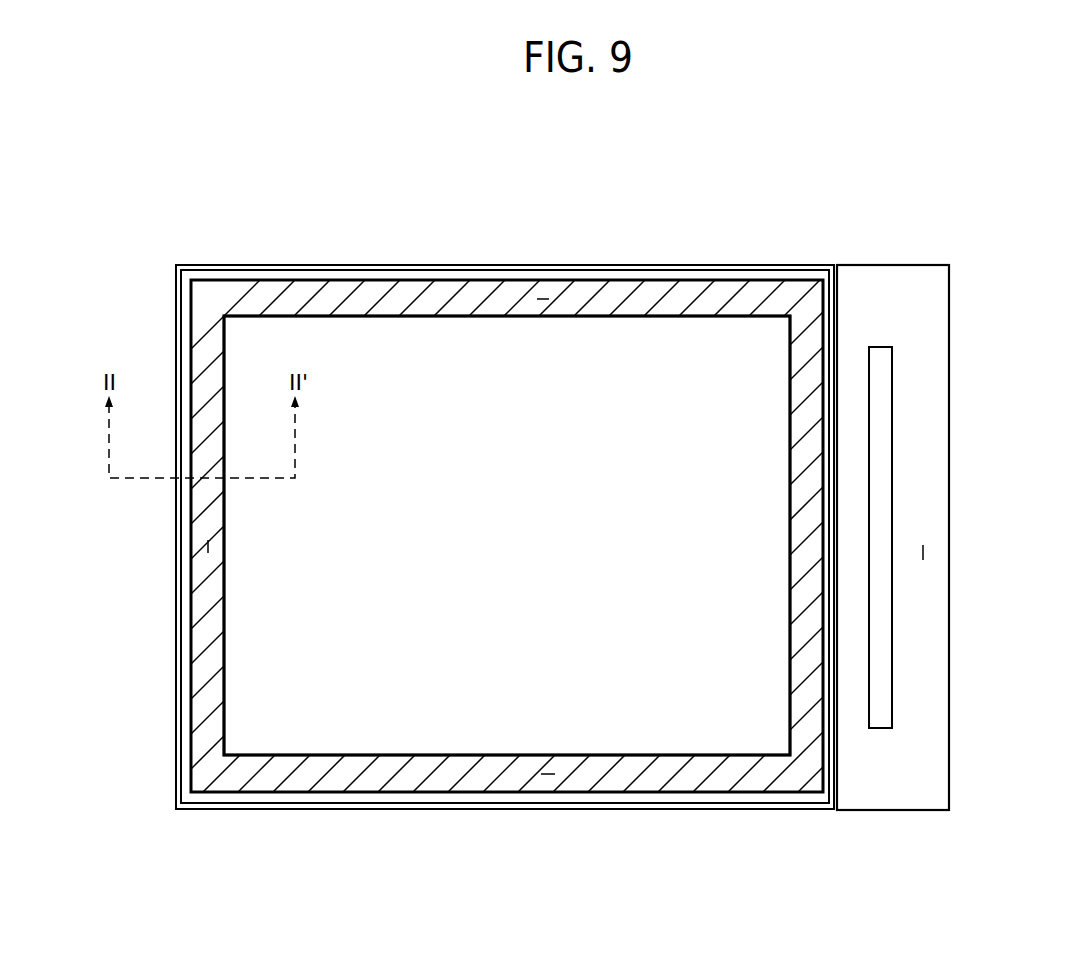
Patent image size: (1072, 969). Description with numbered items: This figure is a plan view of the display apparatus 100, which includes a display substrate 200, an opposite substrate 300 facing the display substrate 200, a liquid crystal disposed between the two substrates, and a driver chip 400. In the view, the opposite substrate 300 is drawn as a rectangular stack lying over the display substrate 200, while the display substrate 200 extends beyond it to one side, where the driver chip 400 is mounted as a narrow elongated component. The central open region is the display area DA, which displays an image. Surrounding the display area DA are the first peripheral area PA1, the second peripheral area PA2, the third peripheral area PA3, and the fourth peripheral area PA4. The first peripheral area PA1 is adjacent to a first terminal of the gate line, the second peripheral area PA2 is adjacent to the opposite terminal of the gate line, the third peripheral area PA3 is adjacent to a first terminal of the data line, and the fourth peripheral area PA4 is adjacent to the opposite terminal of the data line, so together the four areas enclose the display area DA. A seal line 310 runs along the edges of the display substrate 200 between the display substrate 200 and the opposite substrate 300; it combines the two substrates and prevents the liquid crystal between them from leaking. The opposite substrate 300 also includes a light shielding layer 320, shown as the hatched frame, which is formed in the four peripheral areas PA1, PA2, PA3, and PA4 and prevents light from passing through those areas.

The display apparatus 100 is at (890, 238).
The display substrate 200 is at (950, 702).
The opposite substrate 300 is at (840, 773).
The seal line 310 is at (183, 686).
The light shielding layer 320 is at (210, 620).
The driver chip 400 is at (892, 630).
The display area DA is at (668, 372).
The first peripheral area PA1 is at (208, 545).
The second peripheral area PA2 is at (923, 548).
The third peripheral area PA3 is at (543, 298).
The fourth peripheral area PA4 is at (546, 776).